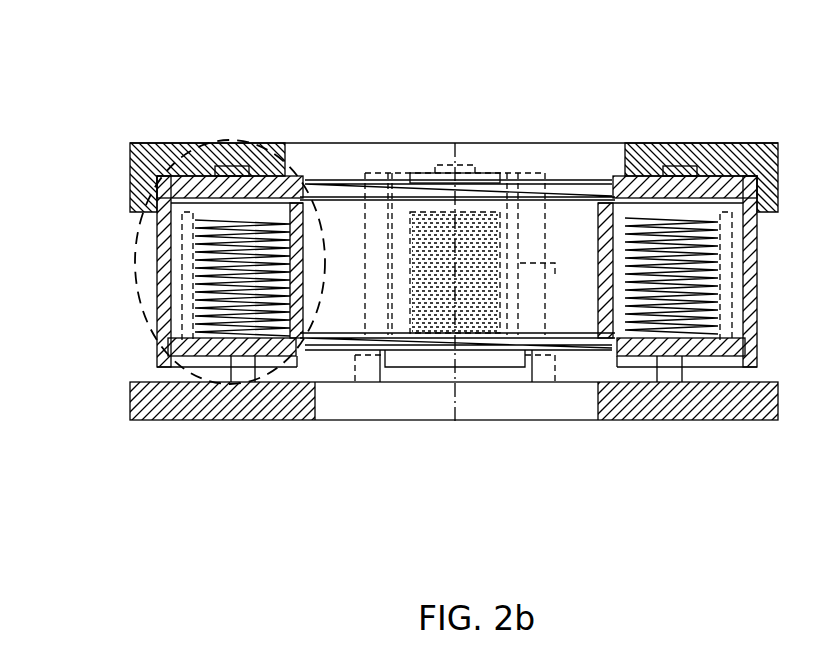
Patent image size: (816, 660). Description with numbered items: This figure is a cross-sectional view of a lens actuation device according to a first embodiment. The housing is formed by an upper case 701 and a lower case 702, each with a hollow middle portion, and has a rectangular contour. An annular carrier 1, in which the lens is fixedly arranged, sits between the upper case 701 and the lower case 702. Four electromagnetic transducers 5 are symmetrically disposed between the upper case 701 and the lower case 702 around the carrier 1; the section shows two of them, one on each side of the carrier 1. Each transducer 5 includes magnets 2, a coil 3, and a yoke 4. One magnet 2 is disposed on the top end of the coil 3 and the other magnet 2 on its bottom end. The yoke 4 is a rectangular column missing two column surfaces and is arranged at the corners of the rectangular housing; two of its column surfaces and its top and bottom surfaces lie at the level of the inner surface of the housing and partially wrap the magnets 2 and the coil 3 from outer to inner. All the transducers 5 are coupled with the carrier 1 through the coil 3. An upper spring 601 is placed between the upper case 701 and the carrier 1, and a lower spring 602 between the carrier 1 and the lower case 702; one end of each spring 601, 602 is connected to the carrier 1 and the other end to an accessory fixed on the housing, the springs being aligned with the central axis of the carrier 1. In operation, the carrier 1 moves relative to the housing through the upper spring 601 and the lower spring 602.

The carrier 1 is at (605, 217).
The magnets 2 is at (210, 337).
The coil 3 is at (266, 256).
The yoke 4 is at (153, 288).
The electromagnetic transducers 5 is at (259, 391).
The upper spring 601 is at (571, 202).
The lower spring 602 is at (495, 356).
The upper case 701 is at (710, 133).
The lower case 702 is at (190, 414).